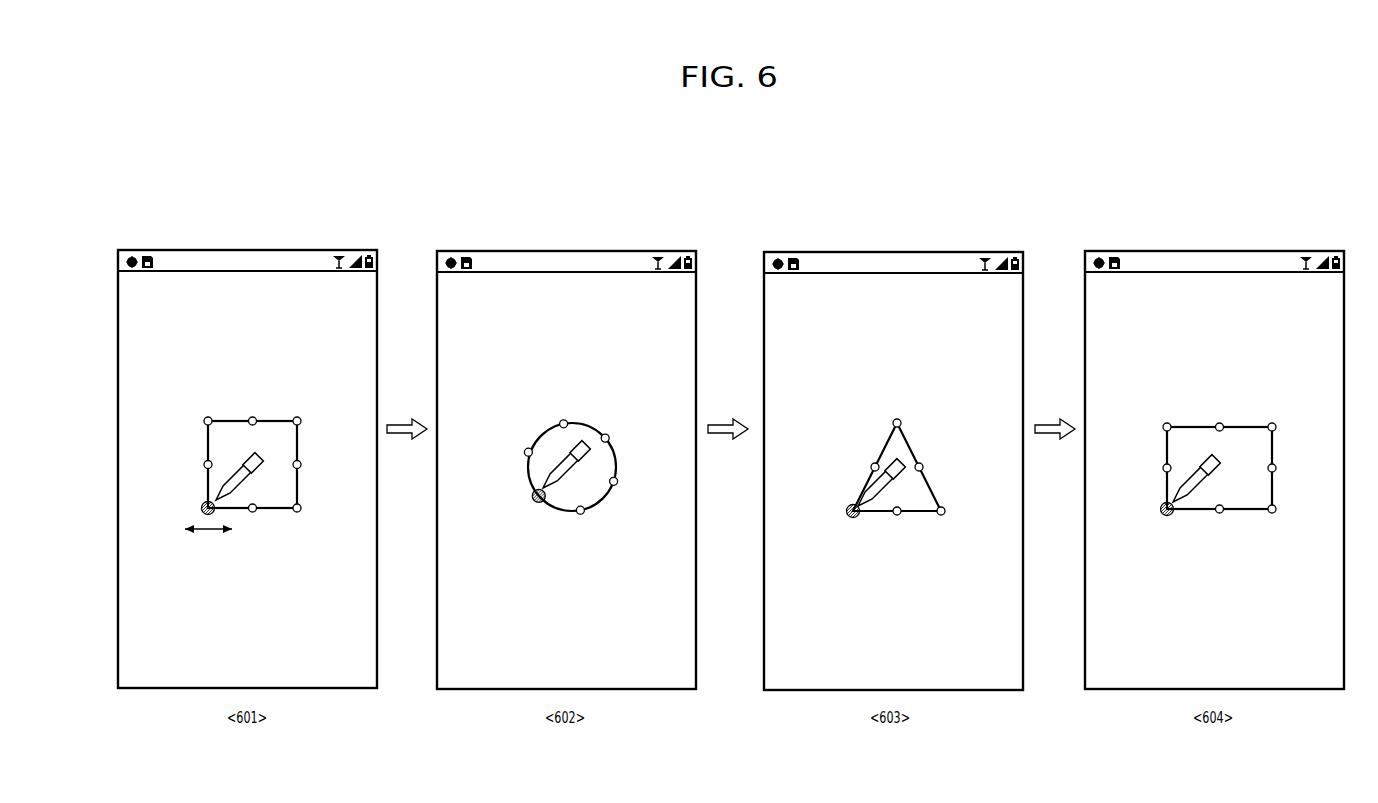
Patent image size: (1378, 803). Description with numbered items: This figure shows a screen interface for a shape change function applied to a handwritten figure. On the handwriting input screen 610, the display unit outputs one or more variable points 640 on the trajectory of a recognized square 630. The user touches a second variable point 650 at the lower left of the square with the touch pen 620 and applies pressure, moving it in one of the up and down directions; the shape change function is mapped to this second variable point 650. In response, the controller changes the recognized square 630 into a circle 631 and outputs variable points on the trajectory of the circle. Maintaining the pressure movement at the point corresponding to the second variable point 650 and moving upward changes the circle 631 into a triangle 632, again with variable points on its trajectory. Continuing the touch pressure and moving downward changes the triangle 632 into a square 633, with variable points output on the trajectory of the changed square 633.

The handwriting input screen 610 is at (308, 250).
The touch pen 620 is at (232, 492).
The square 630 is at (220, 450).
The variable points 640 is at (208, 421).
The second variable point 650 is at (206, 508).
The circle 631 is at (588, 467).
The triangle 632 is at (908, 491).
The square 633 is at (1186, 457).